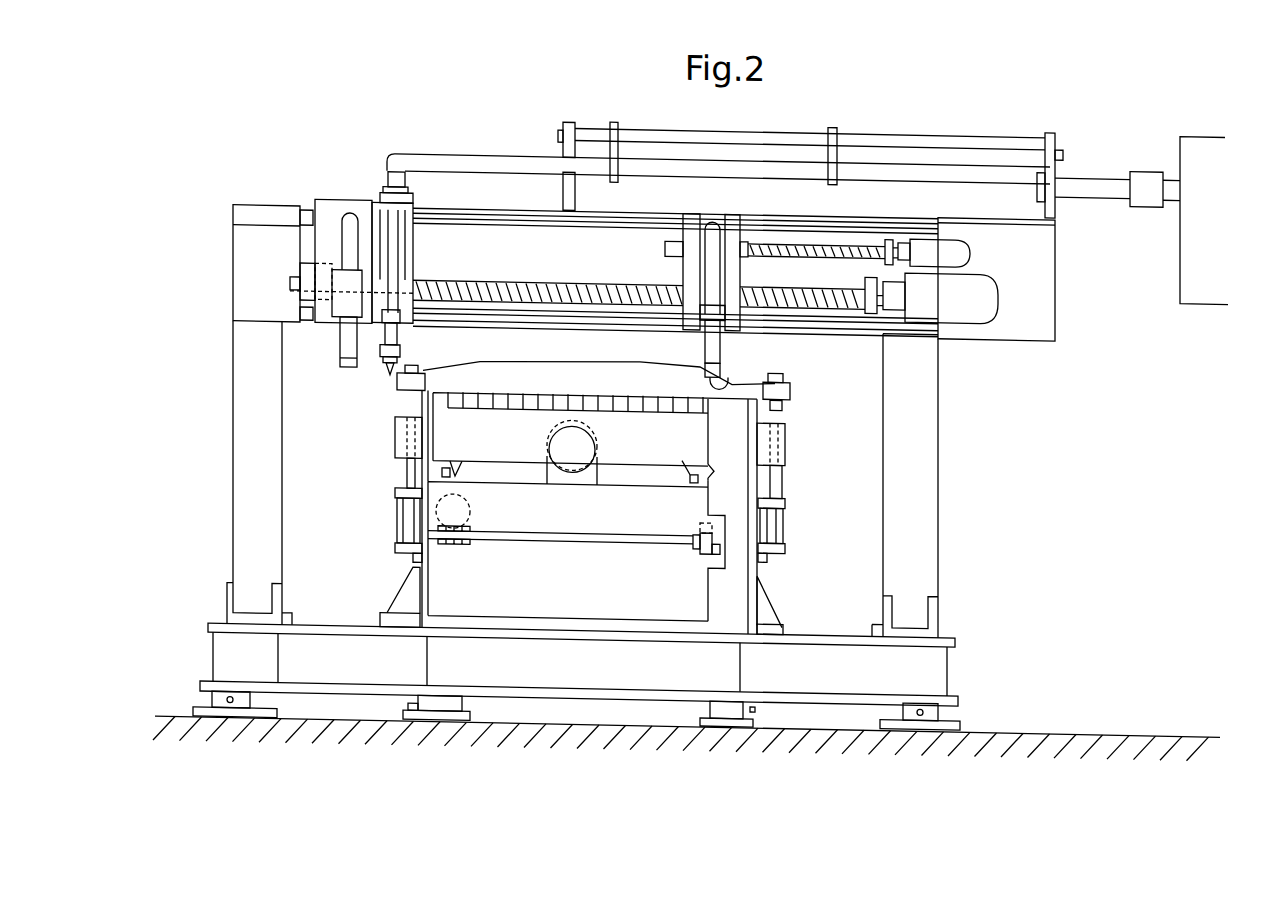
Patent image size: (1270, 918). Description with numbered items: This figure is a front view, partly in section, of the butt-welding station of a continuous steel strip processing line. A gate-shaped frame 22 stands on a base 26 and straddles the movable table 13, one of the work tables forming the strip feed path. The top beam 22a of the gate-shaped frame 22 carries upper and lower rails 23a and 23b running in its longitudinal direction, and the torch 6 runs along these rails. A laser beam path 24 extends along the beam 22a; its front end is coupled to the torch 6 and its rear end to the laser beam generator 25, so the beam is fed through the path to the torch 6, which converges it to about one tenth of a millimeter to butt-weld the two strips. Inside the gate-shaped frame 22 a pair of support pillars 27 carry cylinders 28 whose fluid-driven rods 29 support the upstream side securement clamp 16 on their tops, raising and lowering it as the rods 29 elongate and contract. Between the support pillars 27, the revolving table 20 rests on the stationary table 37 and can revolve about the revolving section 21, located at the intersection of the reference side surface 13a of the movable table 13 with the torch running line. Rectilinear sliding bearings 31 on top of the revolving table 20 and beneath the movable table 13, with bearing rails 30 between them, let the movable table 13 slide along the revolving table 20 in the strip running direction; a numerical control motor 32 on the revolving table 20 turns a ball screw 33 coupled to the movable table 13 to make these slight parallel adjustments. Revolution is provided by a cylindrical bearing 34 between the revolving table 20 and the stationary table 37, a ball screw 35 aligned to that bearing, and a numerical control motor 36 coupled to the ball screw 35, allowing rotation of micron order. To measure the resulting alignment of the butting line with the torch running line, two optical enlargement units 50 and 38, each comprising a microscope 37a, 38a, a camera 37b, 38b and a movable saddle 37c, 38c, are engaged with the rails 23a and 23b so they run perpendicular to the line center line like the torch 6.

The torch 6 is at (397, 330).
The movable table 13 is at (698, 416).
The reference side surface 13a is at (710, 452).
The upstream side securement clamp 16 is at (657, 355).
The revolving table 20 is at (592, 518).
The revolving section 21 is at (709, 554).
The gate-shaped frame 22 is at (488, 193).
The top beam 22a is at (262, 200).
The upper rail 23a is at (625, 207).
The lower rail 23b is at (545, 287).
The laser beam path 24 is at (795, 144).
The laser beam generator 25 is at (1178, 134).
The base 26 is at (585, 665).
The support pillars 27 is at (410, 577).
The cylinders 28 is at (400, 515).
The rods 29 is at (406, 470).
The bearing rails 30 is at (447, 459).
The rectilinear sliding bearings 31 is at (458, 461).
The numerical control motor 32 is at (553, 429).
The ball screw 33 is at (578, 435).
The cylindrical bearing 34 is at (446, 531).
The ball screw 35 is at (456, 503).
The numerical control motor 36 is at (470, 513).
The stationary table 37 is at (495, 602).
The microscope 37a is at (347, 361).
The camera 37b is at (332, 291).
The movable saddle 37c is at (332, 193).
The optical enlargement unit 38 is at (713, 211).
The microscope 38a is at (728, 370).
The camera 38b is at (697, 221).
The movable saddle 38c is at (748, 207).
The optical enlargement unit 50 is at (349, 201).